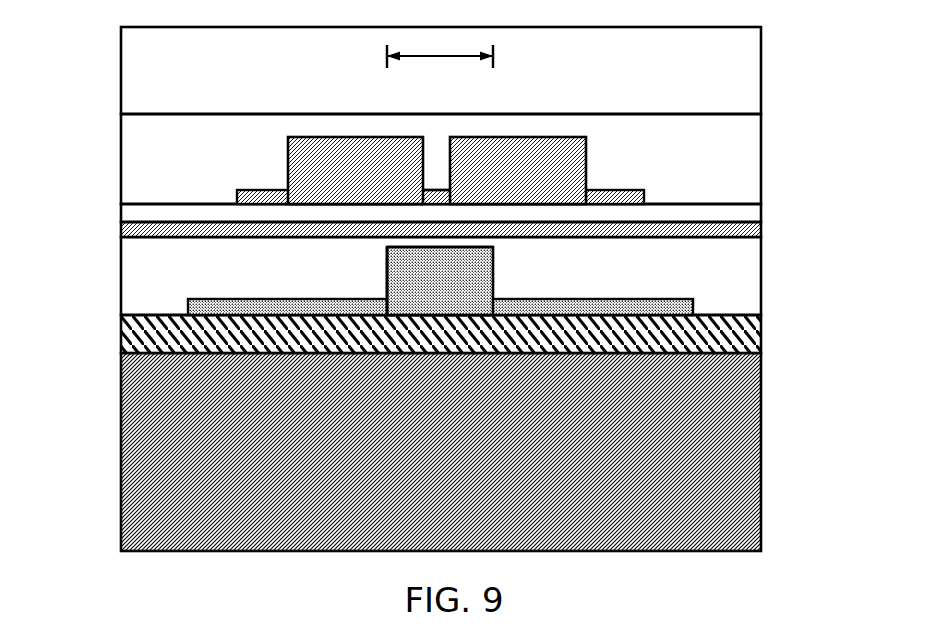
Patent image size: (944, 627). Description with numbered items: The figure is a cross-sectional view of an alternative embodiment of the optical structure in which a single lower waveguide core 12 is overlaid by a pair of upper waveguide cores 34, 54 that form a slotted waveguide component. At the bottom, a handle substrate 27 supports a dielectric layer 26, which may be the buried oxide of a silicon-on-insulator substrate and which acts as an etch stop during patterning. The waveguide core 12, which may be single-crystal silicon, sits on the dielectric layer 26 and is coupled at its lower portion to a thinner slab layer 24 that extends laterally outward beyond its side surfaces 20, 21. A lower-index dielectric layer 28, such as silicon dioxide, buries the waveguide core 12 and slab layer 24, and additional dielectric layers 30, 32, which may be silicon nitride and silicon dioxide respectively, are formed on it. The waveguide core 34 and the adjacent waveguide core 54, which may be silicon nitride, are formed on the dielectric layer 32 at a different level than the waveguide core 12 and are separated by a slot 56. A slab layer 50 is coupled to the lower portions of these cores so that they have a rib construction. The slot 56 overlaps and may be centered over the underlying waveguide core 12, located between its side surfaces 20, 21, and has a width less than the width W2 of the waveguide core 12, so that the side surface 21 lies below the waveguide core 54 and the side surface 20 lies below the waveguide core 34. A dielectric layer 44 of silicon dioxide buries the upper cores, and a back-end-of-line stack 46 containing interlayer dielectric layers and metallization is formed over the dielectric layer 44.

The waveguide core 12 is at (408, 257).
The side surface 20 is at (496, 277).
The side surface 21 is at (387, 280).
The slab layer 24 is at (197, 307).
The dielectric layer 26 is at (723, 333).
The handle substrate 27 is at (152, 470).
The dielectric layer 28 is at (140, 268).
The dielectric layer 30 is at (747, 231).
The dielectric layer 32 is at (140, 216).
The waveguide core 34 is at (557, 170).
The dielectric layer 44 is at (140, 139).
The back-end-of-line stack 46 is at (720, 73).
The slab layer 50 is at (277, 195).
The waveguide core 54 is at (307, 160).
The slot 56 is at (452, 101).
The width W2 is at (440, 48).